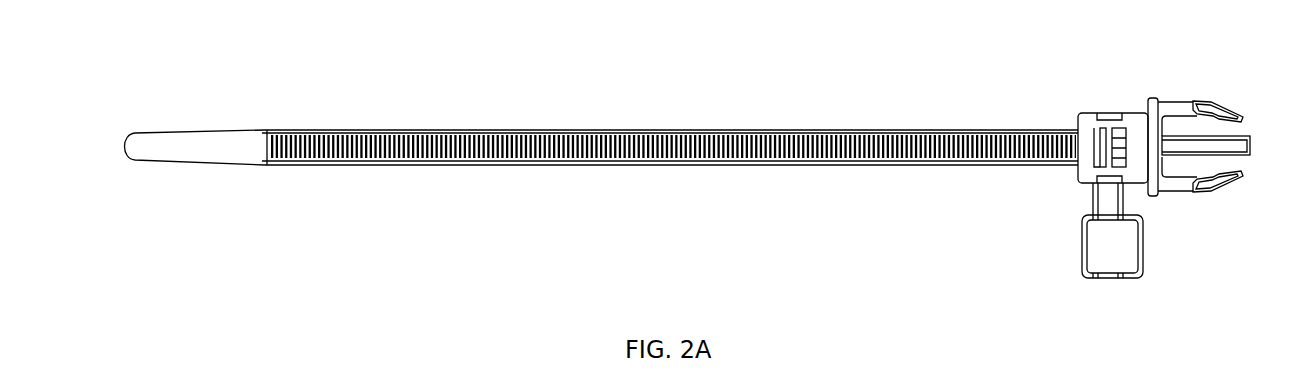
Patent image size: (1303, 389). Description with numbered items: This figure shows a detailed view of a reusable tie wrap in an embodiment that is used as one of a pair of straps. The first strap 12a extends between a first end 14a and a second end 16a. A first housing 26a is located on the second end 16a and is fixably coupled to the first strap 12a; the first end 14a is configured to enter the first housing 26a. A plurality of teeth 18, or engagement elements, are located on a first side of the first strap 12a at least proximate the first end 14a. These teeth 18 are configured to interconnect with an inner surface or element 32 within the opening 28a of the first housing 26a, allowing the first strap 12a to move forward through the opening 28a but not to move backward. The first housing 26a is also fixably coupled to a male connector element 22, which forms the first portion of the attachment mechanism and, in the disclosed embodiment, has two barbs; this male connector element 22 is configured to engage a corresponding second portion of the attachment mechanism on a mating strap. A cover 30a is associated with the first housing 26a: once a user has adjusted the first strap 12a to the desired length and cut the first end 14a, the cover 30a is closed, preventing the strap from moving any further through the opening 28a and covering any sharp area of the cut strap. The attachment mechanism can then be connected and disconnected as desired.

The first strap 12a is at (693, 134).
The first end 14a is at (244, 97).
The second end 16a is at (1218, 136).
The teeth 18 is at (277, 152).
The male connector element 22 is at (1218, 184).
The first housing 26a is at (1093, 127).
The opening 28a is at (1116, 138).
The cover 30a is at (1100, 263).
The inner surface or element 32 is at (1104, 158).